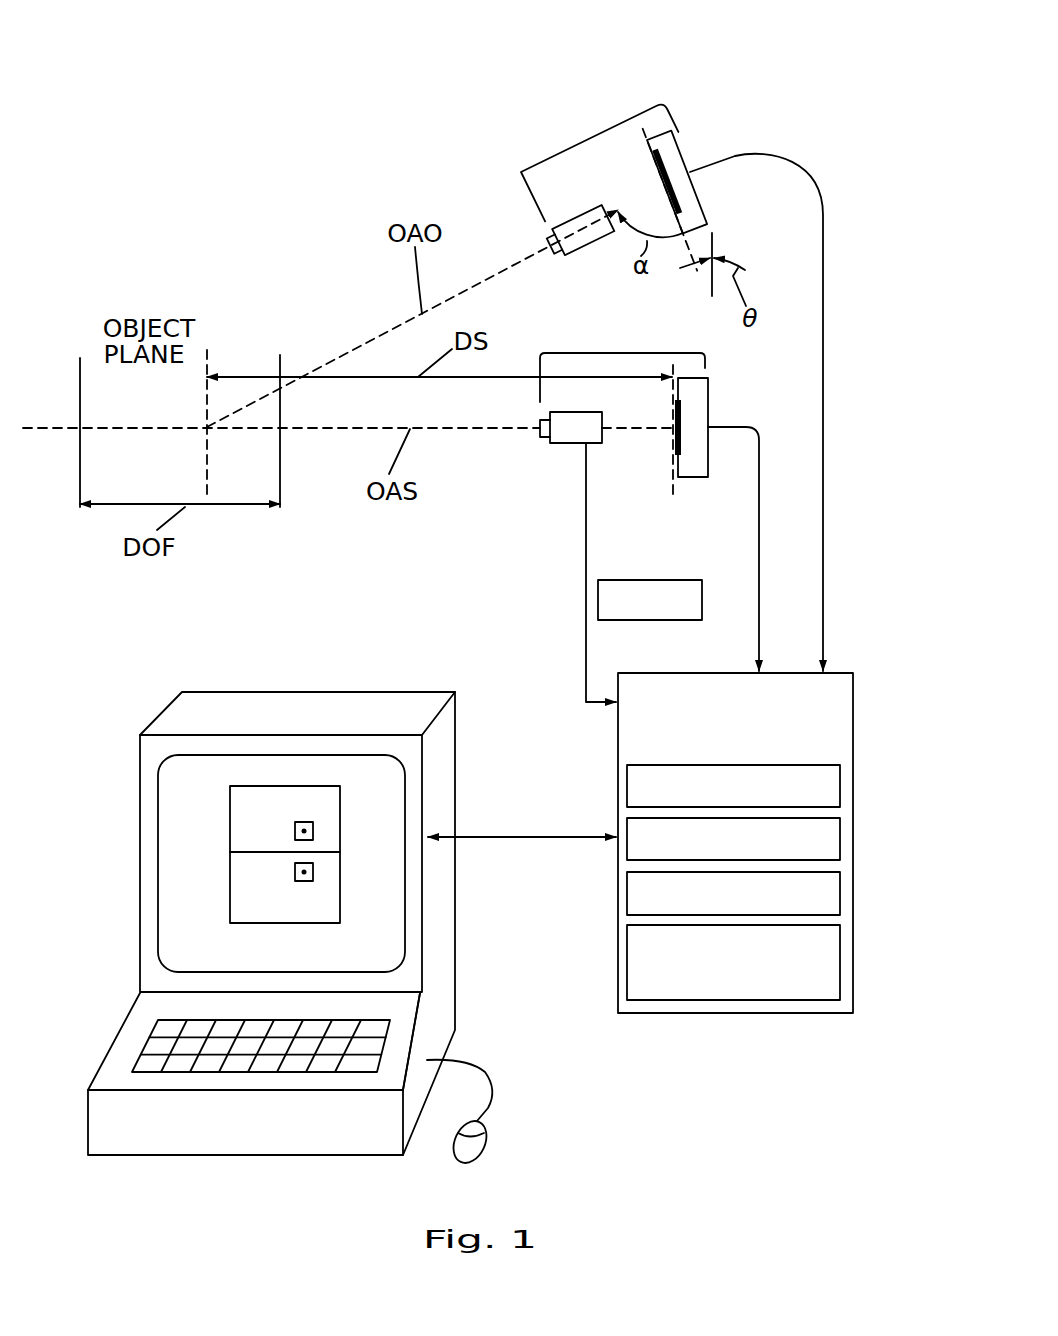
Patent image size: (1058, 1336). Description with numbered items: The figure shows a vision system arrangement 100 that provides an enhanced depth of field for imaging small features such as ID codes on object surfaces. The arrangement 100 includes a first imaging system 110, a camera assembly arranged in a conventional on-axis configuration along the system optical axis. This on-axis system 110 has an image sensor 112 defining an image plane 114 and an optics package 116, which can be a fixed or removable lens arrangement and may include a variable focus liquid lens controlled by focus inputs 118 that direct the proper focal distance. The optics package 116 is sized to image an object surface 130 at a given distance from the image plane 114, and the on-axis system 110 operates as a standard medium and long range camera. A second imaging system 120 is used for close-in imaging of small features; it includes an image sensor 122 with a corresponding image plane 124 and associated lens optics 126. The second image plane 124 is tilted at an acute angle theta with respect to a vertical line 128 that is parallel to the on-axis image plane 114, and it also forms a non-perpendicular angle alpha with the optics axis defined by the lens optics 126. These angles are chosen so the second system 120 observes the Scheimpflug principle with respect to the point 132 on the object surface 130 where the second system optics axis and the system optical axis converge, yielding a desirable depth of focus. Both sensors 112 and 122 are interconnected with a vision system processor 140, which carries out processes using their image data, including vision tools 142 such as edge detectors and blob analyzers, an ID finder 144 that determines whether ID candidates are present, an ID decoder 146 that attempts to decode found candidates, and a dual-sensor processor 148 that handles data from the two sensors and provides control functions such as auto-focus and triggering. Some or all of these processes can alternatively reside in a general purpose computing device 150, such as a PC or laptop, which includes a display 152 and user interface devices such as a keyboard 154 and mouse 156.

The vision system arrangement 100 is at (633, 82).
The first imaging system 110 is at (626, 354).
The image sensor 112 is at (692, 480).
The image plane 114 is at (670, 482).
The optics package 116 is at (565, 447).
The focus inputs 118 is at (678, 581).
The second imaging system 120 is at (597, 132).
The image sensor 122 is at (691, 141).
The image plane 124 is at (712, 228).
The lens optics 126 is at (578, 263).
The vertical line 128 is at (713, 244).
The object surface 130 is at (211, 371).
The convergence point 132 is at (207, 427).
The vision system processor 140 is at (871, 665).
The vision tools 142 is at (838, 787).
The ID finder 144 is at (838, 843).
The ID decoder 146 is at (840, 895).
The dual-sensor processor 148 is at (837, 962).
The general purpose computing device 150 is at (386, 711).
The display 152 is at (270, 767).
The keyboard 154 is at (380, 1043).
The mouse 156 is at (484, 1143).